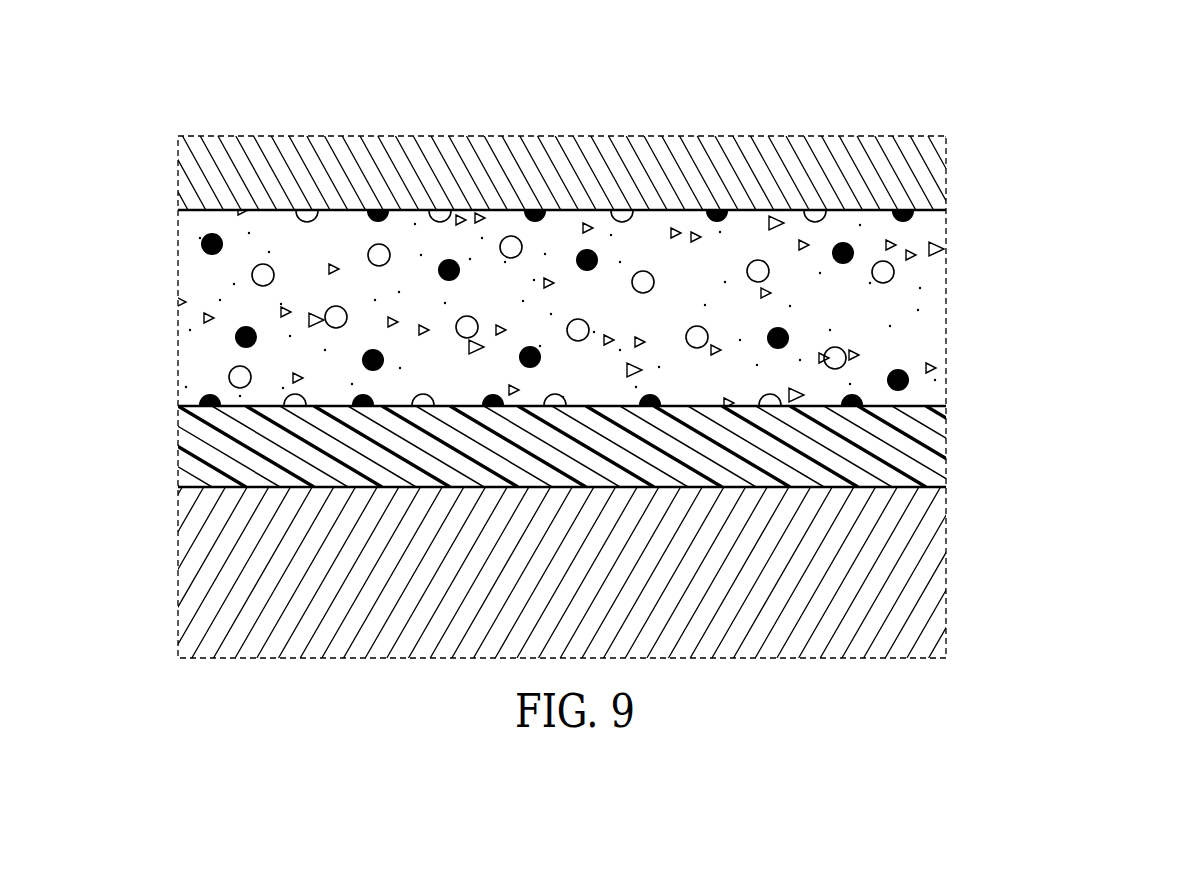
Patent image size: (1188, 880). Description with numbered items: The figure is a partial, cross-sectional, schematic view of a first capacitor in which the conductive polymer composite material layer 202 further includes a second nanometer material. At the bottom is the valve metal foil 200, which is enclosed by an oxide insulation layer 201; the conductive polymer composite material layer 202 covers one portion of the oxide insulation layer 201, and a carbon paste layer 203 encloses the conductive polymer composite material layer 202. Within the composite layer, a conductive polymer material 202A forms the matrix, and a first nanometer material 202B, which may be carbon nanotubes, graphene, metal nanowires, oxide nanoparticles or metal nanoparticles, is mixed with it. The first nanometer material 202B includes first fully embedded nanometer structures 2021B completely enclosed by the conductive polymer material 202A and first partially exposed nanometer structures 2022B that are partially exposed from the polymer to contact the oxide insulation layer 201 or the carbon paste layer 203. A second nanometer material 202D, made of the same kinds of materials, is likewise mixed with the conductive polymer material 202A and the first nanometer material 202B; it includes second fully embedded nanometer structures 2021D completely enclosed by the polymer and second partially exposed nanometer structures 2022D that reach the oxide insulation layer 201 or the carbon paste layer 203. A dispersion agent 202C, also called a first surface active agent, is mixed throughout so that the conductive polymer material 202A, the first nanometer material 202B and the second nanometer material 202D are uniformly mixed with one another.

The valve metal foil 200 is at (913, 580).
The oxide insulation layer 201 is at (913, 460).
The conductive polymer composite material layer 202 is at (1100, 228).
The conductive polymer material 202A is at (913, 313).
The first nanometer material 202B is at (886, 270).
The dispersion agent 202C is at (944, 248).
The second nanometer material 202D is at (904, 368).
The carbon paste layer 203 is at (913, 176).
The first fully embedded nanometer structures 2021B is at (376, 254).
The first partially exposed nanometer structures 2022B is at (302, 216).
The second fully embedded nanometer structures 2021D is at (778, 330).
The second partially exposed nanometer structures 2022D is at (648, 400).